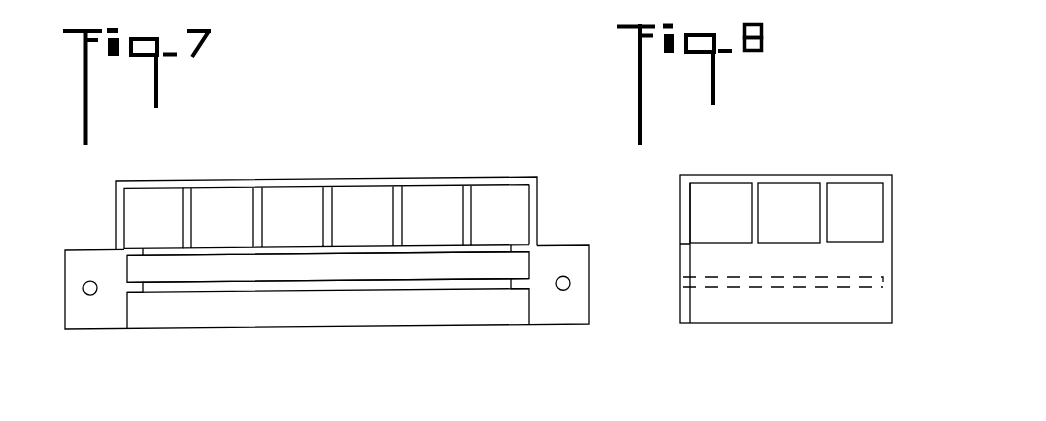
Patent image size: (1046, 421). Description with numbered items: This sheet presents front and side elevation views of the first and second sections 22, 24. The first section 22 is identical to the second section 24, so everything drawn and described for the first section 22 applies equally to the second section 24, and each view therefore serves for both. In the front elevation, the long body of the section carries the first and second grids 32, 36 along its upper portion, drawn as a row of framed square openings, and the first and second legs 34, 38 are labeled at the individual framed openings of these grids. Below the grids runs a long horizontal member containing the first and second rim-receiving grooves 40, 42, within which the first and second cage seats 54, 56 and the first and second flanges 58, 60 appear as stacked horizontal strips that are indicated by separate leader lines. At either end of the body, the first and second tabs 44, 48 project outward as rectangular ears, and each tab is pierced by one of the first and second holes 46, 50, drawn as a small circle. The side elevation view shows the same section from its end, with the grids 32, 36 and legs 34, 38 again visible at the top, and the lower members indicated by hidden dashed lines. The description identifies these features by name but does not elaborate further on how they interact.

In FIG. 7, the first section 22 is at (323, 239).
In FIG. 8, the first section 22 is at (758, 207).
In FIG. 7, the second section 24 is at (499, 142).
In FIG. 8, the second section 24 is at (842, 153).
In FIG. 7, the first grid 32 is at (278, 188).
In FIG. 8, the first grid 32 is at (737, 179).
In FIG. 7, the second grid 36 is at (307, 157).
In FIG. 8, the second grid 36 is at (752, 178).
In FIG. 7, the first leg 34 is at (102, 207).
In FIG. 8, the first leg 34 is at (675, 208).
In FIG. 7, the second leg 38 is at (185, 220).
In FIG. 8, the second leg 38 is at (758, 220).
In FIG. 7, the first rim-receiving groove 40 is at (328, 328).
In FIG. 7, the second rim-receiving groove 42 is at (132, 271).
In FIG. 7, the first tab 44 is at (330, 312).
In FIG. 7, the second tab 48 is at (92, 317).
In FIG. 7, the first hole 46 is at (326, 325).
In FIG. 7, the second hole 50 is at (95, 293).
In FIG. 7, the first cage seat 54 is at (328, 309).
In FIG. 7, the second cage seat 56 is at (408, 255).
In FIG. 7, the first flange 58 is at (328, 342).
In FIG. 7, the second flange 60 is at (488, 286).